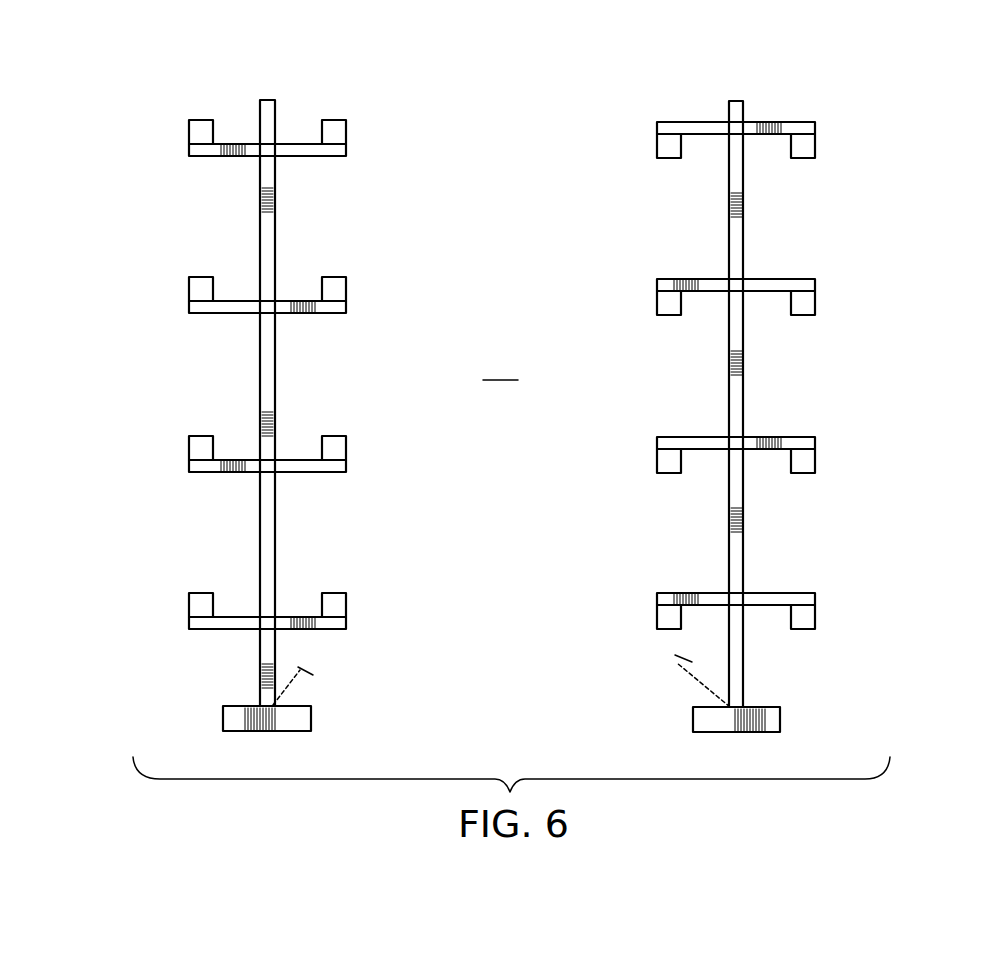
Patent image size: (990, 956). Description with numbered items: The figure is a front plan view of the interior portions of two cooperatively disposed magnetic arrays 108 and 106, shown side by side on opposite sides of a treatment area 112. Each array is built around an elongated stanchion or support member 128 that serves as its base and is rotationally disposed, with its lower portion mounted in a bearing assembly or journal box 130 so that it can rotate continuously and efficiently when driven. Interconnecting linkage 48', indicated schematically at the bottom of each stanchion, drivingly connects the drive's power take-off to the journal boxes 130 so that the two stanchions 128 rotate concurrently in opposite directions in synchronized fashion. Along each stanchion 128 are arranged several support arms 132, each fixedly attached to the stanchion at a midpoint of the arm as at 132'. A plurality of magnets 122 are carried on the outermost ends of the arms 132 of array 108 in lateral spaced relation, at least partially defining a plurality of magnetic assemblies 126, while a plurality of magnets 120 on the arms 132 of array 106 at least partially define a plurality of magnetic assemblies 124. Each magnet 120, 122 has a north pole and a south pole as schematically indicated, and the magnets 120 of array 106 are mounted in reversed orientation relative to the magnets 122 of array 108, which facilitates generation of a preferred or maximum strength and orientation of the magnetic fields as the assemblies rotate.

The magnetic array 106 is at (880, 112).
The magnetic array 108 is at (148, 120).
The treatment area 112 is at (501, 368).
The magnets 120 is at (668, 143).
The magnets 122 is at (200, 137).
The magnetic assemblies 124 is at (762, 112).
The magnetic assemblies 126 is at (300, 169).
The stanchion 128 is at (275, 203).
The bearing assembly or journal box 130 is at (255, 706).
The support arms 132 is at (451, 367).
The midpoint of support arms 132' is at (538, 377).
The interconnecting linkage 48' is at (501, 693).